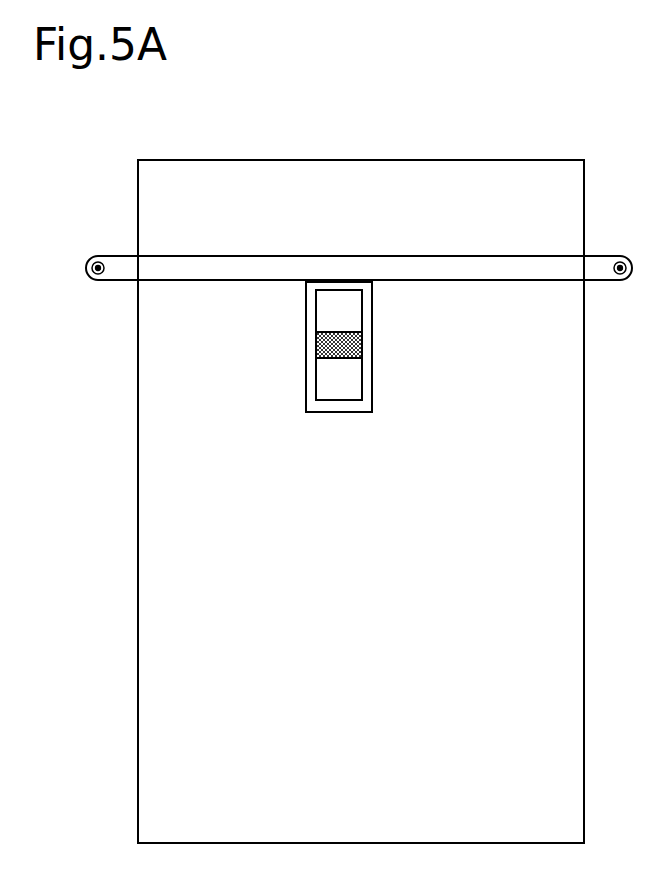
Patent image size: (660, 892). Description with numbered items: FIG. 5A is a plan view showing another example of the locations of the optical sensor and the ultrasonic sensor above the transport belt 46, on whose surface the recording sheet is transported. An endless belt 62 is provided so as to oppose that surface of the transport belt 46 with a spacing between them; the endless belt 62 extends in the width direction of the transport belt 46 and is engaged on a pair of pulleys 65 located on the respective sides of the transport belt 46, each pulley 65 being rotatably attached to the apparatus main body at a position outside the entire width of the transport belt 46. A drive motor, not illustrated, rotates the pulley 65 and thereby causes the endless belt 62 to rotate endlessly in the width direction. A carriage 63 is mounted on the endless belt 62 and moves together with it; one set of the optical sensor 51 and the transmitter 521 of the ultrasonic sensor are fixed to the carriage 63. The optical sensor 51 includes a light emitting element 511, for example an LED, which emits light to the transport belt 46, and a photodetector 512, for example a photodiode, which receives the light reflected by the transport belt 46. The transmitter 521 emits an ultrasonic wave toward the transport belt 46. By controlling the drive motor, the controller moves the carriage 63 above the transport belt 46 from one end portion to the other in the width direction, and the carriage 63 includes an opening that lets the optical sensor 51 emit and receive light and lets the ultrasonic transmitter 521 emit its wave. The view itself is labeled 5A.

The transport belt 46 is at (366, 160).
The endless belt 62 is at (447, 256).
The pulley 65 is at (621, 258).
The carriage 63 is at (362, 282).
The optical sensor 51 is at (340, 290).
The light emitting element 511 is at (333, 313).
The transmitter 521 is at (338, 343).
The photodetector 512 is at (332, 388).
The sensor assembly 5A is at (363, 378).